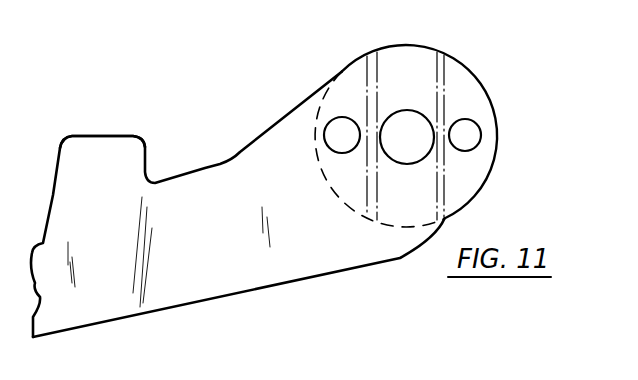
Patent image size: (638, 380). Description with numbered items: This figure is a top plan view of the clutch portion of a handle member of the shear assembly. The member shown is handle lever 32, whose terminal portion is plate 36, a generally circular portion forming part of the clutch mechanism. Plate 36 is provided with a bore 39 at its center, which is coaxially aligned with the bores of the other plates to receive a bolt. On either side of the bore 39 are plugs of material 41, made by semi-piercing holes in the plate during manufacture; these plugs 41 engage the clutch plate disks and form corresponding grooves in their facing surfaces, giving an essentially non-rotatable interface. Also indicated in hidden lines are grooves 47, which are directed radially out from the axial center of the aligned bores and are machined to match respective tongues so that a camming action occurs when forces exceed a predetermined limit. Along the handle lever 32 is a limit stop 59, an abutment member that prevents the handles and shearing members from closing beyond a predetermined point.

The handle lever 32 is at (205, 168).
The limit stop 59 is at (121, 99).
The plate 36 is at (473, 69).
The bore 39 is at (420, 120).
The plugs of material 41 is at (294, 110).
The grooves 47 is at (437, 181).